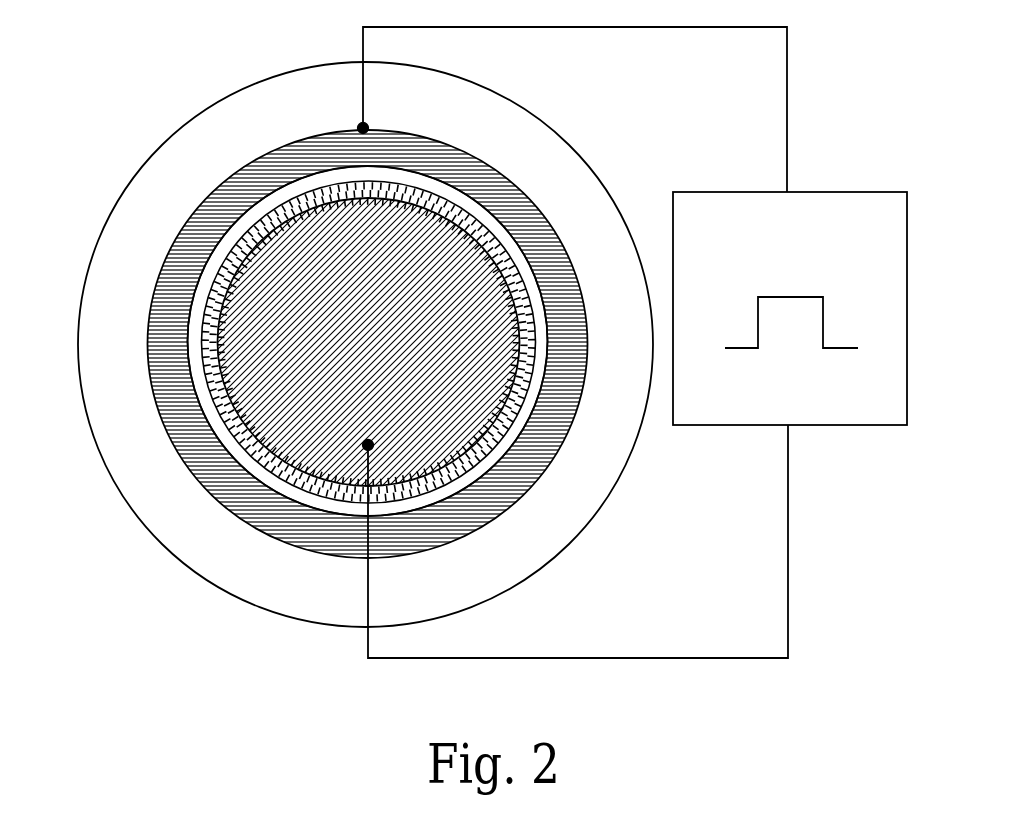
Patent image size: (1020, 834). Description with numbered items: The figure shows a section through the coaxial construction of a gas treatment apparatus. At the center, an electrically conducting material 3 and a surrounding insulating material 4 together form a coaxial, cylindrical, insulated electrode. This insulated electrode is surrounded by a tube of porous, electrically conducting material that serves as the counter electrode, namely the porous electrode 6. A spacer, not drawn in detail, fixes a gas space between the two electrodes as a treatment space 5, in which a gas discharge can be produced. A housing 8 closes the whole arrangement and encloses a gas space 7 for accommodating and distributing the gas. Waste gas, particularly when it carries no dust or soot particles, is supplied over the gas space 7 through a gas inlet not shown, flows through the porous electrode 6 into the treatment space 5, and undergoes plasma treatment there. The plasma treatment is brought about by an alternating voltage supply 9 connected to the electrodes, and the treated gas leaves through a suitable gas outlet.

The electrically conducting material 3 is at (308, 266).
The insulating material 4 is at (218, 282).
The treatment space 5 is at (188, 326).
The porous electrode 6 is at (167, 390).
The gas space 7 is at (132, 446).
The housing 8 is at (137, 513).
The alternating voltage supply 9 is at (873, 218).